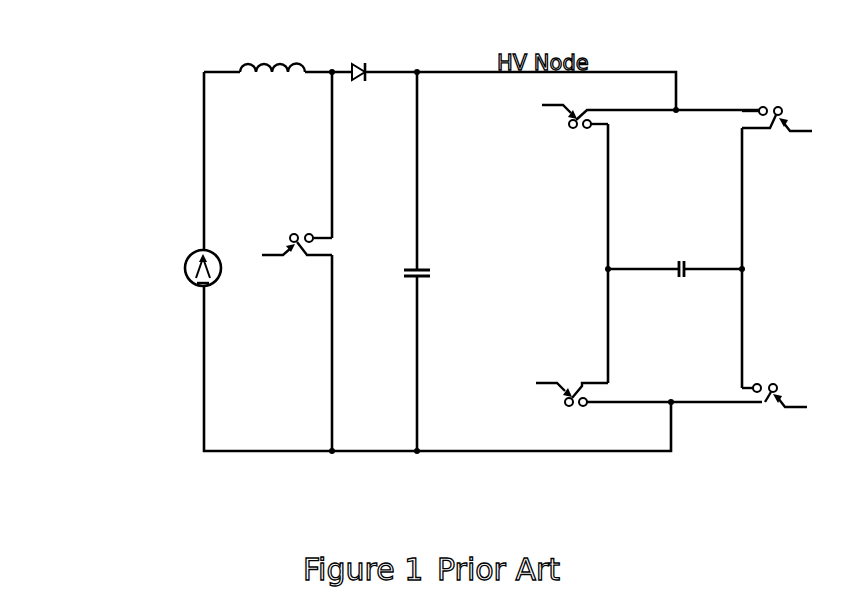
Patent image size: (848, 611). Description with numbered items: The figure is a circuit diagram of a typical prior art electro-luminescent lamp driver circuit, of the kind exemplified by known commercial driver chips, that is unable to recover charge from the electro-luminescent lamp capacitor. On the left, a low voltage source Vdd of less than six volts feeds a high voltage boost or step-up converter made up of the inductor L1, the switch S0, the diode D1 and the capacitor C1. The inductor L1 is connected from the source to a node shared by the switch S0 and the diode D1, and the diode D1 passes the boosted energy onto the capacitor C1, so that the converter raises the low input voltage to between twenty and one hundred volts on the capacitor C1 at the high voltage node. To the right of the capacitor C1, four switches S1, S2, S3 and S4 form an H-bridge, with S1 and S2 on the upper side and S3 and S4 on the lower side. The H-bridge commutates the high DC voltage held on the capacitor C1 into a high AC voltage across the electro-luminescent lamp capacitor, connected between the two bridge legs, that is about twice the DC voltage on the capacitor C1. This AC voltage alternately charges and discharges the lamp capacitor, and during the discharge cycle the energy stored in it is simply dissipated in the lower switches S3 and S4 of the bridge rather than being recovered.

The inductor L1 is at (268, 50).
The diode D1 is at (370, 54).
The switch S0 is at (297, 228).
The capacitor C1 is at (393, 265).
The low voltage source Vdd is at (128, 274).
The switch S1 is at (652, 136).
The switch S2 is at (777, 104).
The switch S3 is at (649, 414).
The switch S4 is at (774, 415).